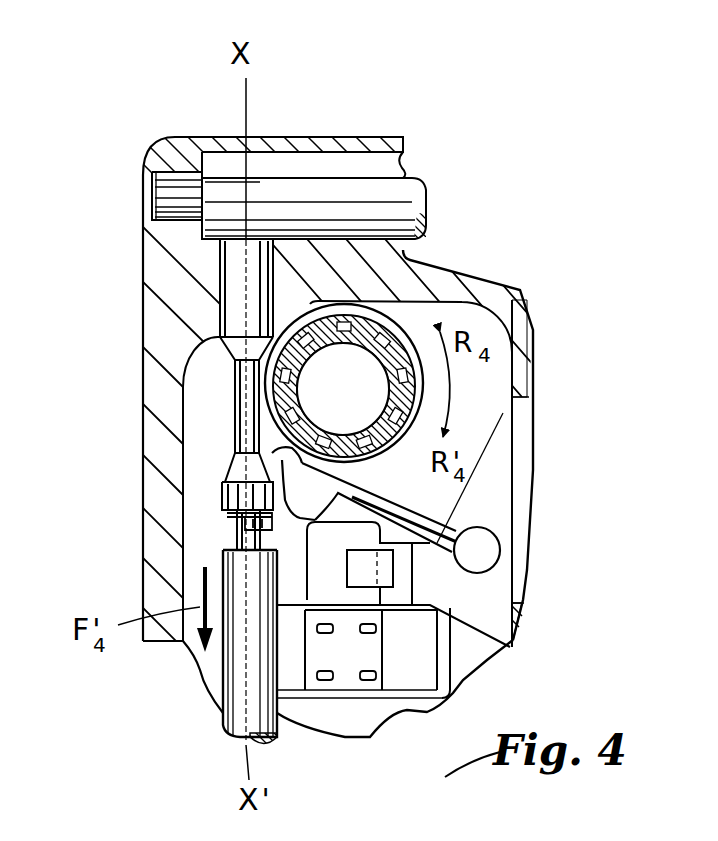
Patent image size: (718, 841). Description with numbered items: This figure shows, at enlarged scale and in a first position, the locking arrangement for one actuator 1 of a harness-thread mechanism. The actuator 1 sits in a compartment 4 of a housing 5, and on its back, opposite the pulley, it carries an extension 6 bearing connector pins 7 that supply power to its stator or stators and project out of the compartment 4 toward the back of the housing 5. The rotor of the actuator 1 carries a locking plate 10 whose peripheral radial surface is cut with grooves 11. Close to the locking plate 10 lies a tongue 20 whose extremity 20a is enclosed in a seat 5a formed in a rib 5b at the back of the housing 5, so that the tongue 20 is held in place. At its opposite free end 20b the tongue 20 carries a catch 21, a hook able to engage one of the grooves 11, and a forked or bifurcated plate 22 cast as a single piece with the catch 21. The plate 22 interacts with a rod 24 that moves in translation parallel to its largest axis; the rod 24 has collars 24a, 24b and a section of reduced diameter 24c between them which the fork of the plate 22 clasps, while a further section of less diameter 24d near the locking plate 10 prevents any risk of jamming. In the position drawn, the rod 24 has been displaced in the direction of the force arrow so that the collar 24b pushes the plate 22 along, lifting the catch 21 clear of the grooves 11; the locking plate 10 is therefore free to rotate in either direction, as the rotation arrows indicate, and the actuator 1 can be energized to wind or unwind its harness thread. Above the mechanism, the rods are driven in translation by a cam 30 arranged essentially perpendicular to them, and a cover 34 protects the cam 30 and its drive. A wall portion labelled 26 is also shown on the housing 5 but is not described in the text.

The actuator 1 is at (485, 408).
The compartment 4 is at (400, 338).
The housing 5 is at (522, 285).
The seat 5a is at (505, 526).
The rib 5b is at (494, 487).
The extension 6 is at (377, 650).
The connector pins 7 is at (367, 681).
The locking plate 10 is at (386, 392).
The grooves 11 is at (345, 307).
The tongue 20 is at (396, 480).
The extremity of the tongue 20a is at (500, 551).
The free end of the tongue 20b is at (345, 478).
The catch 21 is at (226, 450).
The forked plate 22 is at (226, 524).
The rod 24 is at (240, 714).
The collar 24a is at (228, 540).
The collar 24b is at (224, 512).
The section of reduced diameter 24c is at (228, 528).
The section of less diameter 24d is at (228, 402).
The housing wall upper portion 26 is at (487, 372).
The cam 30 is at (405, 193).
The cover 34 is at (358, 148).